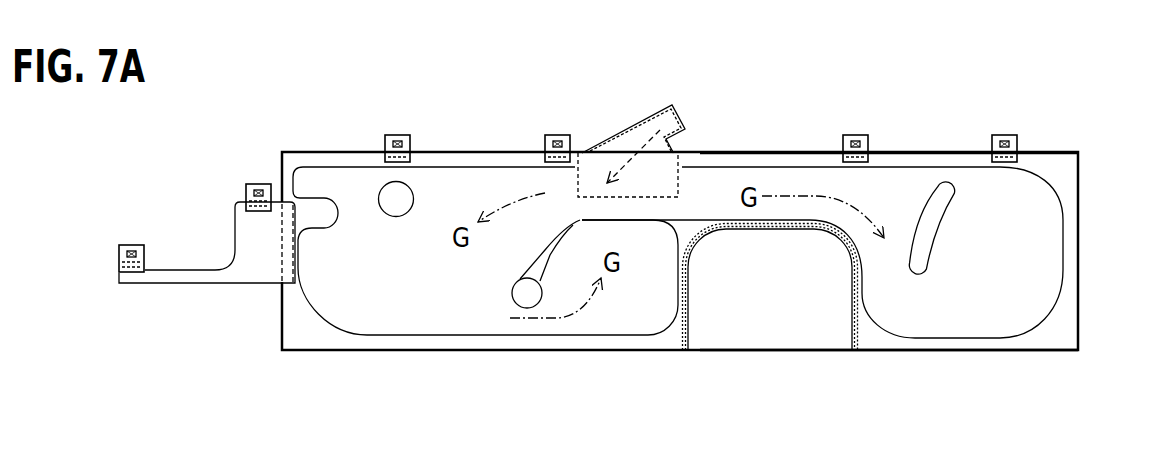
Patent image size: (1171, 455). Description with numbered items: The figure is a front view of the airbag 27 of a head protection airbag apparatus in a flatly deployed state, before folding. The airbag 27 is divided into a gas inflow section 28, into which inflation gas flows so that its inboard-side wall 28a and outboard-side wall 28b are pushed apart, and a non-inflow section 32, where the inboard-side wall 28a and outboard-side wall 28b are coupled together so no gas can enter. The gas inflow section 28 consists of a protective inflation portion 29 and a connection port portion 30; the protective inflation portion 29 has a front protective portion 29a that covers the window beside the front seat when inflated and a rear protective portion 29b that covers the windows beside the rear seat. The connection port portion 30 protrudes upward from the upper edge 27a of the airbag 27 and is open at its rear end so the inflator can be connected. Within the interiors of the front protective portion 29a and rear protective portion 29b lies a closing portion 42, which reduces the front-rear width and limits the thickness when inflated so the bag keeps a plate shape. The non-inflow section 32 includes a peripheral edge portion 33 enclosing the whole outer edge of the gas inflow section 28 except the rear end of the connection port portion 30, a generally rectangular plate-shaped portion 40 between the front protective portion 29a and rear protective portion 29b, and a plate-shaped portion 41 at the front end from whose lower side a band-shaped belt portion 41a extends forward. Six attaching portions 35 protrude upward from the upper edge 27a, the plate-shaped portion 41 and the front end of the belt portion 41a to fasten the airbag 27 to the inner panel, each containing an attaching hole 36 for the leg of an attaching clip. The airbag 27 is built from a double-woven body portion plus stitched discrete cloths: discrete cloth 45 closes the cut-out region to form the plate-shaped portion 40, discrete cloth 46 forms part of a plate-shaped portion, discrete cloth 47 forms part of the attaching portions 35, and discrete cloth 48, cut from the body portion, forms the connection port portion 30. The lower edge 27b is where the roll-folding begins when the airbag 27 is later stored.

The airbag 27 is at (1074, 127).
The upper edge 27a is at (942, 160).
The lower edge 27b is at (938, 352).
The gas inflow section 28 is at (678, 252).
The inboard-side wall 28a is at (395, 325).
The outboard-side wall 28b is at (420, 323).
The protective inflation portion 29 is at (352, 337).
The front protective portion 29a is at (523, 325).
The rear protective portion 29b is at (905, 312).
The connection port portion 30 is at (628, 142).
The non-inflow section 32 is at (641, 249).
The peripheral edge portion 33 is at (1070, 202).
The attaching portions 35 is at (410, 142).
The attaching hole 36 is at (395, 138).
The plate-shaped portion 40 is at (727, 338).
The plate-shaped portion 41 is at (245, 273).
The belt portion 41a is at (163, 275).
The closing portion 42 is at (384, 198).
The discrete cloth 45 is at (788, 338).
The discrete cloth 46 is at (203, 272).
The discrete cloth 47 is at (131, 275).
The discrete cloth 48 is at (674, 125).